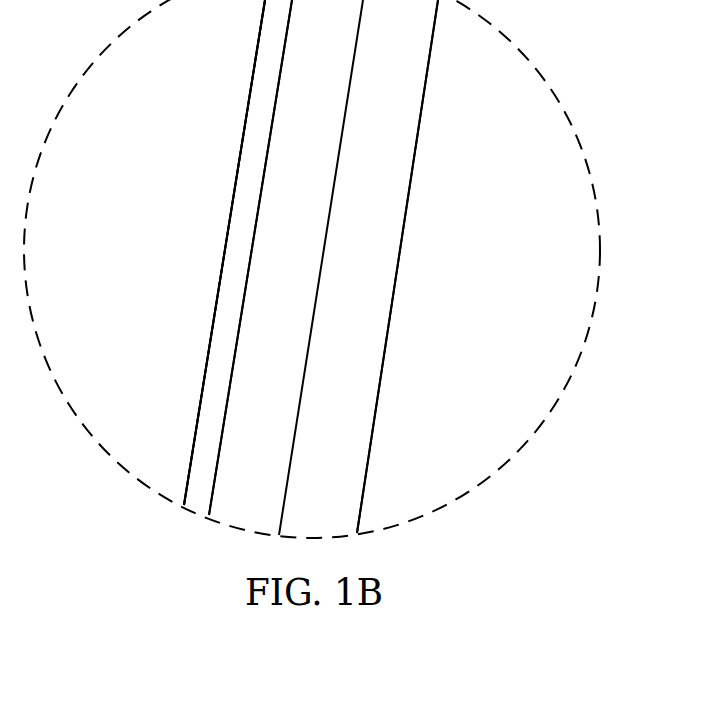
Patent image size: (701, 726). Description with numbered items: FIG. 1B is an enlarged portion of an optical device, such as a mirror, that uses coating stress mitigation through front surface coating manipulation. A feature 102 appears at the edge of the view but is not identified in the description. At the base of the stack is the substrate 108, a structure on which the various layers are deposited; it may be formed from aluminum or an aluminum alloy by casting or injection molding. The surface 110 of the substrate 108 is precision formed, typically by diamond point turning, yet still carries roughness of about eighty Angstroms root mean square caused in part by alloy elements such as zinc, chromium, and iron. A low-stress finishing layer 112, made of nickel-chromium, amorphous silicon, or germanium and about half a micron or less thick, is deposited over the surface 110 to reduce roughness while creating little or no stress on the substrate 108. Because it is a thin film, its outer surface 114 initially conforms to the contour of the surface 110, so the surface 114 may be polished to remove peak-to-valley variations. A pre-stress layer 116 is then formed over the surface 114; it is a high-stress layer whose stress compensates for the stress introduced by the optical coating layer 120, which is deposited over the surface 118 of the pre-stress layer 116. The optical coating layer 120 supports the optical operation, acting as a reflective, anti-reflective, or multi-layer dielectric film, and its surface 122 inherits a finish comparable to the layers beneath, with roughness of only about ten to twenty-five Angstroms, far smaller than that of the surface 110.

The device 102 is at (15, 639).
The substrate 108 is at (134, 58).
The surface of the substrate 110 is at (222, 238).
The low-stress finishing layer 112 is at (208, 400).
The outer surface of the finishing layer 114 is at (237, 325).
The pre-stress layer 116 is at (287, 174).
The surface of the pre-stress layer 118 is at (287, 450).
The optical coating layer 120 is at (363, 410).
The surface of the optical coating layer 122 is at (392, 284).